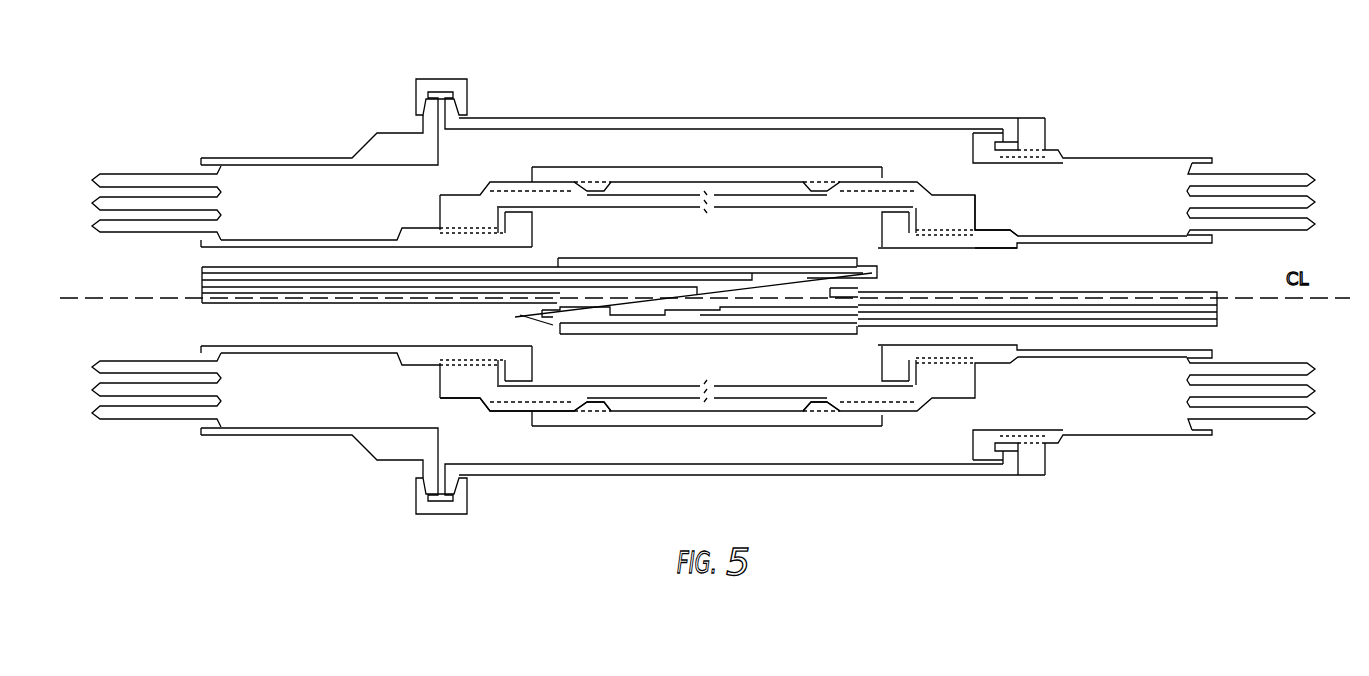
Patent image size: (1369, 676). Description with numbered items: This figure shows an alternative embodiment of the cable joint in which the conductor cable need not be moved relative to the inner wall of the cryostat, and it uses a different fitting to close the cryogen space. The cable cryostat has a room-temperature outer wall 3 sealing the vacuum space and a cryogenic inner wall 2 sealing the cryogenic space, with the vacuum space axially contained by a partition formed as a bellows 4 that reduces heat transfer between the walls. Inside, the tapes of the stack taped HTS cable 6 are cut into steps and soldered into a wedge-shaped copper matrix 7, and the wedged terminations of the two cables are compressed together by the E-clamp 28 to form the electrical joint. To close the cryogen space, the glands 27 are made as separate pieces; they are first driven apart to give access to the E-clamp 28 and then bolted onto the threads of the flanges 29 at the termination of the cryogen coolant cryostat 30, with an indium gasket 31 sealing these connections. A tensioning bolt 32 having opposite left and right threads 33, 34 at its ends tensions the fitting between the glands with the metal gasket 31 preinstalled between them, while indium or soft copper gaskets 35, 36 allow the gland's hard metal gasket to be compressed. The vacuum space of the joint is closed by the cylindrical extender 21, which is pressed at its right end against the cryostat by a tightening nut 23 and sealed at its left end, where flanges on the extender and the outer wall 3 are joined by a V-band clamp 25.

The inner wall 2 is at (1212, 352).
The outer wall 3 is at (1212, 430).
The bellows 4 is at (1313, 413).
The stack taped HTS cable 6 is at (273, 285).
The wedge-shaped copper matrix 7 is at (872, 273).
The cylindrical extender 21 is at (815, 118).
The tightening nut 23 is at (1040, 135).
The V-band clamp 25 is at (447, 83).
The glands 27 is at (635, 385).
The E-clamp 28 is at (520, 315).
The flanges 29 is at (522, 225).
The cryogen coolant cryostat 30 is at (985, 233).
The indium gasket 31 is at (713, 392).
The tensioning bolt 32 is at (613, 413).
The left thread 33 is at (880, 412).
The right thread 34 is at (509, 406).
The indium or soft copper gasket 35 is at (503, 372).
The indium or soft copper gasket 36 is at (905, 375).